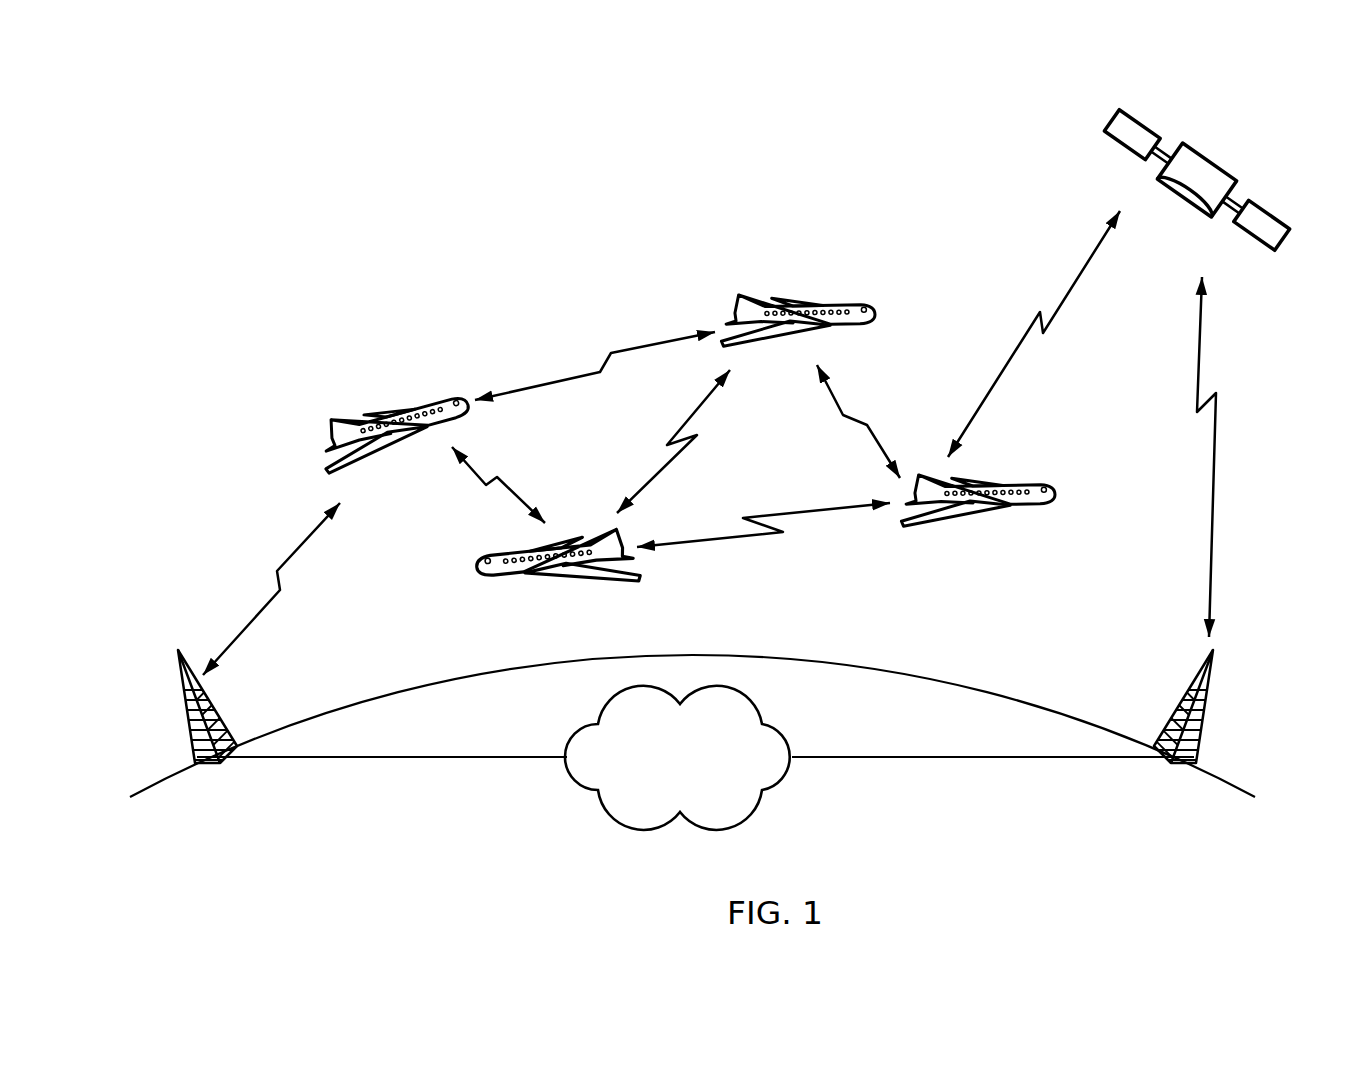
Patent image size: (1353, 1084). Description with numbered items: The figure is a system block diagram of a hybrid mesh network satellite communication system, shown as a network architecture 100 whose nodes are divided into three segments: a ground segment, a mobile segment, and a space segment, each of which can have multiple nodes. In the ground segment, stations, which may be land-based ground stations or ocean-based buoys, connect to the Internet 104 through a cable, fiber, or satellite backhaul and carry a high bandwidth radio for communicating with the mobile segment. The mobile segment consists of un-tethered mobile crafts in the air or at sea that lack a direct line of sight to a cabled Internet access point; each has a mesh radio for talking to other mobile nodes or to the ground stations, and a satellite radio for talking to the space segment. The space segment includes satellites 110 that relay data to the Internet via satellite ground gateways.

The network architecture 100 is at (311, 252).
The Internet 104 is at (712, 822).
The satellites 110 is at (1209, 156).